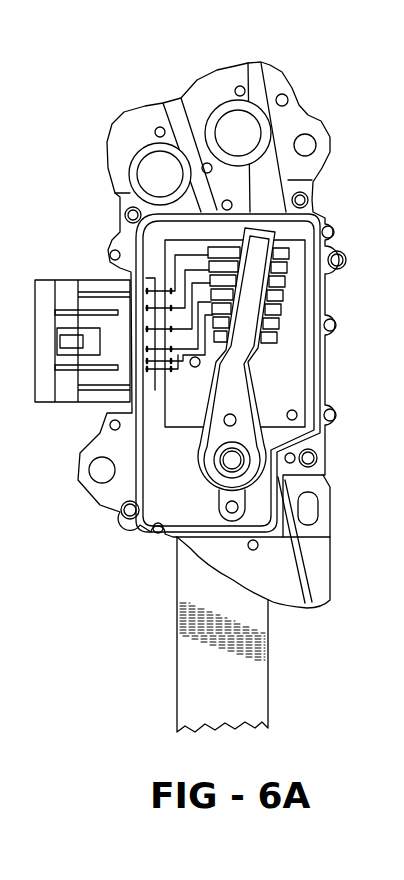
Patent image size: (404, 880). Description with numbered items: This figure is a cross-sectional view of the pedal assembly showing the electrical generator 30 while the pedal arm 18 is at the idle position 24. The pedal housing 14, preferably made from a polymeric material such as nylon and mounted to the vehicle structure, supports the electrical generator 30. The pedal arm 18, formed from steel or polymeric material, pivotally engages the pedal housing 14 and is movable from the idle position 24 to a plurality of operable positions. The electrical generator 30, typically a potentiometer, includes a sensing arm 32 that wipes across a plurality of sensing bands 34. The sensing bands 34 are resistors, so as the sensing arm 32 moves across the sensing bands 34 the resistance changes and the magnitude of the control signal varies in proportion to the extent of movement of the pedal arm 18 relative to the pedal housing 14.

The pedal housing 14 is at (296, 101).
The pedal arm 18 is at (270, 687).
The idle position 24 is at (171, 678).
The electrical generator 30 is at (283, 345).
The sensing arm 32 is at (277, 231).
The sensing bands 34 is at (280, 347).